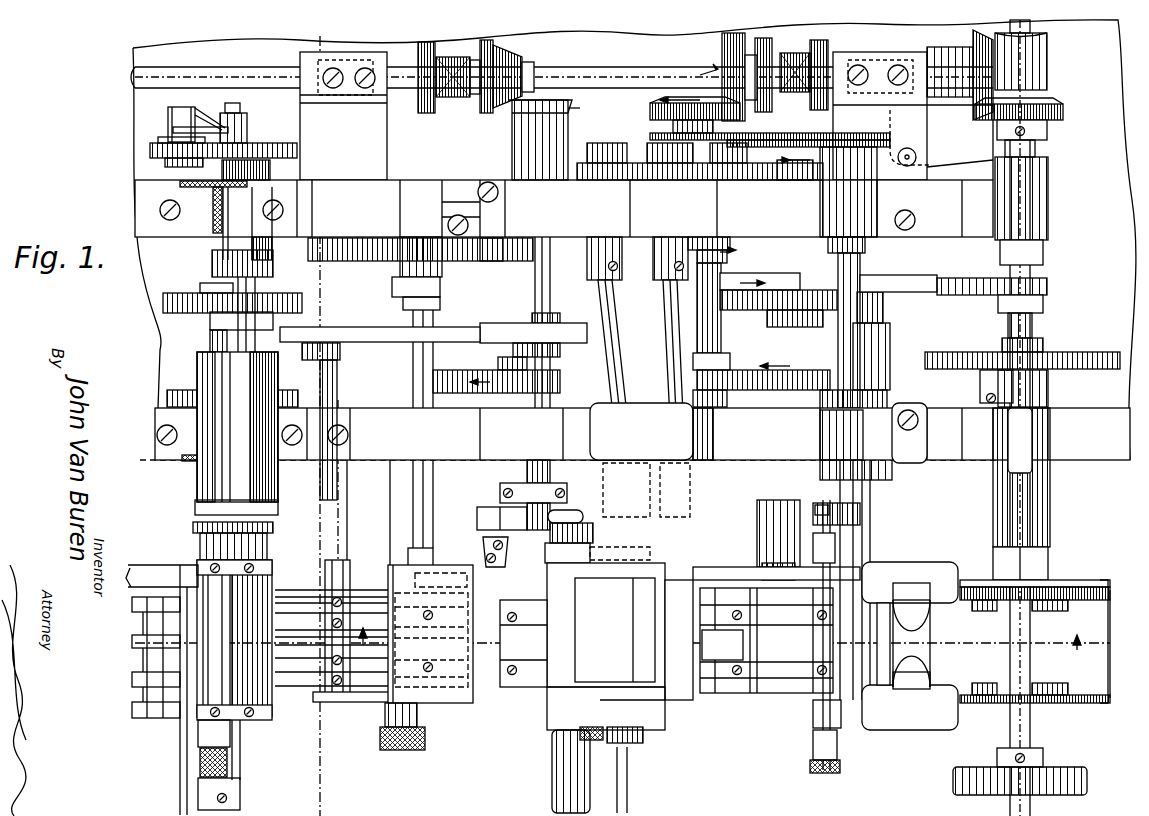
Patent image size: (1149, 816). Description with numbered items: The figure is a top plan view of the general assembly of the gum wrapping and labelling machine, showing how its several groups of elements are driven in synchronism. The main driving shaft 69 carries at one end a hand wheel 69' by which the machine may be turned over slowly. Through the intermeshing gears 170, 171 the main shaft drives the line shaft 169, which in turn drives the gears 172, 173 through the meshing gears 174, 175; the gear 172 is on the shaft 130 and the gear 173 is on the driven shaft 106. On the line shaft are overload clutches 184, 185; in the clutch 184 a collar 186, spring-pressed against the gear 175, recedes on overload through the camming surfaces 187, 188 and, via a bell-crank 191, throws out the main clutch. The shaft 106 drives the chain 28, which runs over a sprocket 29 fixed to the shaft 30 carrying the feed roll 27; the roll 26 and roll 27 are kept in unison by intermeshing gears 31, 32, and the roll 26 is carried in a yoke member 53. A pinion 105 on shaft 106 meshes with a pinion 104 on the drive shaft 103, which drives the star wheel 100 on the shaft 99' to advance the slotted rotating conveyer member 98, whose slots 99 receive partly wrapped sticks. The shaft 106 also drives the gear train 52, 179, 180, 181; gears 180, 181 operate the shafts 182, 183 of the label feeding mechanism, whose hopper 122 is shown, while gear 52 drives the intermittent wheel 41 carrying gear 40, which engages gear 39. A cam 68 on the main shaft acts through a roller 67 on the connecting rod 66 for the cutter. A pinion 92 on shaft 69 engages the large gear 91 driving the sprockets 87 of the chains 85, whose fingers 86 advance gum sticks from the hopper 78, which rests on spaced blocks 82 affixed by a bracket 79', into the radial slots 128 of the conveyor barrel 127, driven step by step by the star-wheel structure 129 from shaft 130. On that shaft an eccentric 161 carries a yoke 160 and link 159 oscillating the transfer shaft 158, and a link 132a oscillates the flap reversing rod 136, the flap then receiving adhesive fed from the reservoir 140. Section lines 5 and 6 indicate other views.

The line shaft 169 is at (630, 82).
The gear 174 is at (505, 58).
The gear 175 is at (723, 77).
The camming surface 187 is at (694, 77).
The collar 186 is at (693, 99).
The overload clutch 184 is at (775, 85).
The camming surface 188 is at (804, 73).
The chain 28 is at (825, 110).
The sprocket 29 is at (895, 135).
The bell-crank 191 is at (948, 150).
The gear 170 is at (970, 36).
The gear 171 is at (1045, 112).
The main driving shaft 69 is at (1041, 418).
The overload clutch 185 is at (521, 140).
The gear 172 is at (592, 107).
The gear 181 is at (618, 180).
The gear 180 is at (688, 180).
The gear 179 is at (758, 180).
The gear 52 is at (768, 180).
The gear 173 is at (675, 116).
The driven shaft 106 is at (718, 128).
The shaft 30 is at (862, 268).
The pinion 105 is at (698, 240).
The pinion 104 is at (728, 245).
The wheel 41 is at (739, 256).
The shaft 130 is at (540, 300).
The eccentric 161 is at (565, 336).
The yoke 160 is at (382, 322).
The star-wheel structure 129 is at (496, 369).
The shaft 182 is at (615, 370).
The shaft 183 is at (673, 358).
The drive shaft 103 is at (725, 340).
The star wheel 100 is at (798, 372).
The gear 40 is at (778, 306).
The gear 39 is at (885, 305).
The connecting rod 66 is at (930, 293).
The roller 67 is at (985, 280).
The cam 68 is at (1043, 276).
The pinion 92 is at (1025, 362).
The large gear 91 is at (1103, 357).
The link 159 is at (296, 393).
The shaft 158 is at (338, 392).
The flap reversing rod 136 is at (488, 722).
The section arrow 6 is at (578, 643).
The section arrow 5 is at (882, 652).
The reservoir 140 is at (426, 657).
The link 132a is at (583, 513).
The hopper 122 is at (620, 646).
The radial slot 128 is at (530, 632).
The conveyor barrel 127 is at (532, 733).
The shaft 99' is at (776, 540).
The rotating conveyer member 98 is at (765, 693).
The slot 99 is at (725, 717).
The roll 26 is at (823, 705).
The yoke member 53 is at (813, 540).
The gear 32 is at (814, 499).
The gear 31 is at (862, 520).
The roll 27 is at (850, 715).
The spaced block 82 is at (910, 578).
The bracket 79' is at (941, 611).
The hopper 78 is at (918, 725).
The chain 85 is at (1062, 592).
The finger 86 is at (1108, 641).
The sprocket 87 is at (1070, 683).
The hand wheel 69' is at (1025, 780).